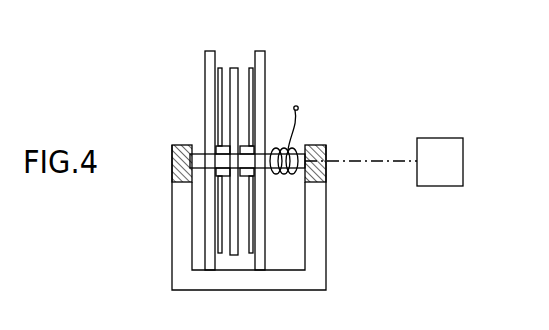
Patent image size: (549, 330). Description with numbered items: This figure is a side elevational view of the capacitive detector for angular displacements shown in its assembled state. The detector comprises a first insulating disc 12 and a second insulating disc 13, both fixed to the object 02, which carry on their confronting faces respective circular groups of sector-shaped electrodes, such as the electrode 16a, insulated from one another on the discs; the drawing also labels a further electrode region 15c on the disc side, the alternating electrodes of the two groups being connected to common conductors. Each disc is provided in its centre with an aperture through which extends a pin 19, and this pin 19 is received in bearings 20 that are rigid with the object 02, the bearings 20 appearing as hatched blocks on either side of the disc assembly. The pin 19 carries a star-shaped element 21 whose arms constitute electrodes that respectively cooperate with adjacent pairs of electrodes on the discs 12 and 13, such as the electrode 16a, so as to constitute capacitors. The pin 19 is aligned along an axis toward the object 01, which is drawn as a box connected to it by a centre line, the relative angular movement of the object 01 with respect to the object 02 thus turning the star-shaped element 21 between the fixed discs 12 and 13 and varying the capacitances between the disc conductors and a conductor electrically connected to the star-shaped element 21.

The first insulating disc 12 is at (205, 55).
The second insulating disc 13 is at (263, 62).
The electrode 16a is at (288, 95).
The star-shaped element 21 is at (234, 58).
The bearings 20 is at (181, 145).
The pin 19 is at (200, 167).
The plate lower ends 15c is at (350, 232).
The object O1 01 is at (450, 170).
The object O2 02 is at (315, 276).